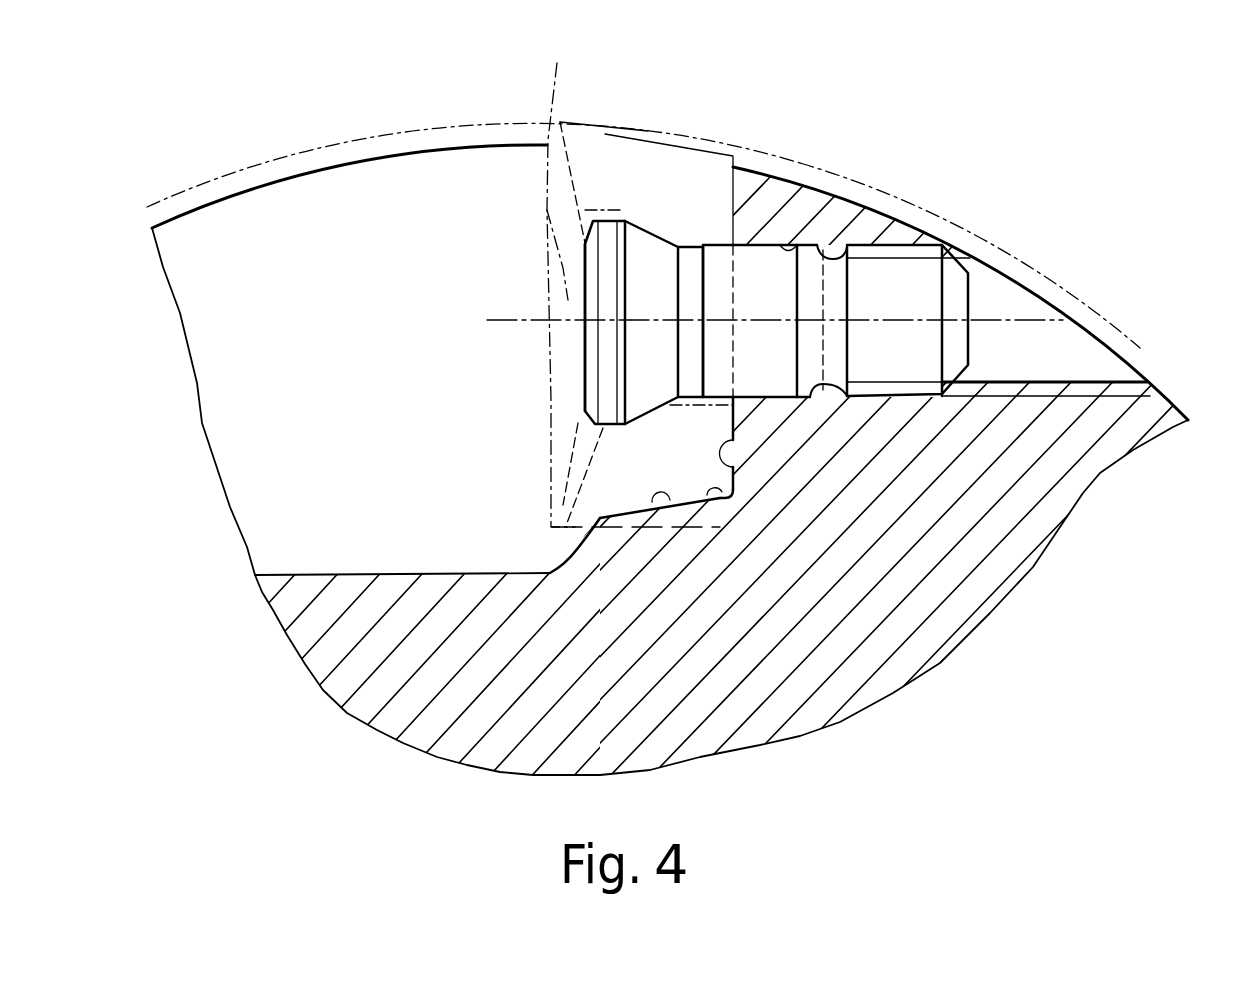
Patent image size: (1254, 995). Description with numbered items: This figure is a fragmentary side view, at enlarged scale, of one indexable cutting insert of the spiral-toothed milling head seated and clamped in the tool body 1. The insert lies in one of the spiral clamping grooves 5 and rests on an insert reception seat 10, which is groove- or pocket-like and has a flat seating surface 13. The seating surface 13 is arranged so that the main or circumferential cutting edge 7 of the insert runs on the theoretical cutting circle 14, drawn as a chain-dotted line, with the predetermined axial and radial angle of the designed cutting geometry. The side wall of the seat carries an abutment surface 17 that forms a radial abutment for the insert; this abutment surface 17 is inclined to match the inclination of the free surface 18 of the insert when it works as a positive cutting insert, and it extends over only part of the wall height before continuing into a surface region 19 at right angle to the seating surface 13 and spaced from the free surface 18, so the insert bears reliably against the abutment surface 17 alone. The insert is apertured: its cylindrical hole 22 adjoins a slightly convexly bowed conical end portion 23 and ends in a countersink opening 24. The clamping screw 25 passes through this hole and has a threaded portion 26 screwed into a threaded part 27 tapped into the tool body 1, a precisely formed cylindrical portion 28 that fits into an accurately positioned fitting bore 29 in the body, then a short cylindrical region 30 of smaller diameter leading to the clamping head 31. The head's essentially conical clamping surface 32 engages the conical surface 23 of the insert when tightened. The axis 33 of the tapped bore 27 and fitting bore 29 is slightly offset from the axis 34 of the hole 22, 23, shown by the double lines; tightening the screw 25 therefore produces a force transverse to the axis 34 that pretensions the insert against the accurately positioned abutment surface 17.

The tool body 1 is at (915, 630).
The clamping groove 5 is at (273, 500).
The main or circumferential cutting edge 7 is at (561, 280).
The insert reception seat 10 is at (737, 508).
The seating surface 13 is at (740, 493).
The theoretical cutting circle 14 is at (757, 150).
The abutment surface 17 is at (667, 500).
The free surface 18 is at (564, 518).
The surface region 19 is at (712, 493).
The hole 22 is at (689, 243).
The conical end portion 23 is at (645, 417).
The countersink opening 24 is at (602, 442).
The clamping screw 25 is at (843, 245).
The threaded portion 26 is at (900, 350).
The threaded part 27 is at (1127, 382).
The cylindrical portion 28 is at (755, 270).
The fitting bore 29 is at (832, 278).
The cylindrical region 30 is at (687, 363).
The clamping head 31 is at (585, 289).
The conical clamping surface 32 is at (639, 246).
The axis of the tapped bore 33 is at (1063, 300).
The axis of the hole 34 is at (487, 320).